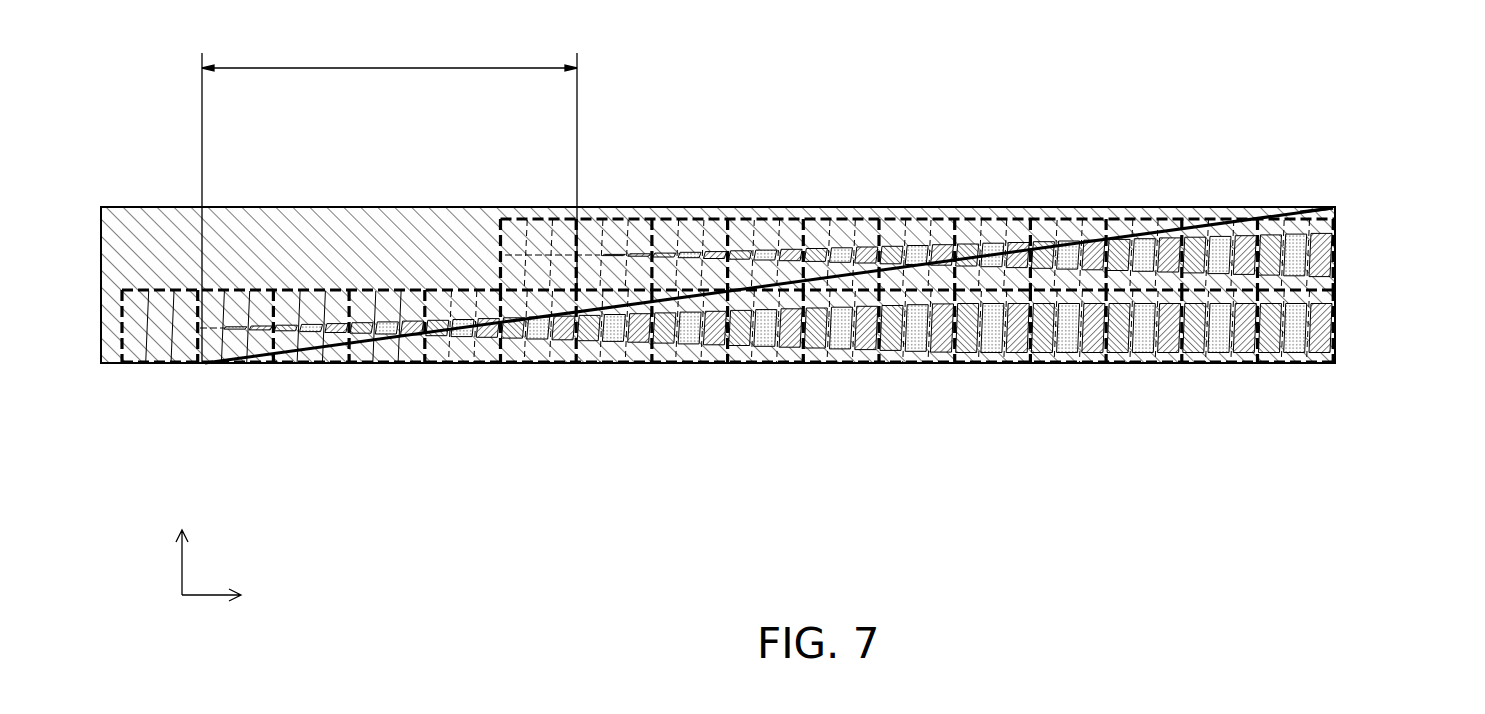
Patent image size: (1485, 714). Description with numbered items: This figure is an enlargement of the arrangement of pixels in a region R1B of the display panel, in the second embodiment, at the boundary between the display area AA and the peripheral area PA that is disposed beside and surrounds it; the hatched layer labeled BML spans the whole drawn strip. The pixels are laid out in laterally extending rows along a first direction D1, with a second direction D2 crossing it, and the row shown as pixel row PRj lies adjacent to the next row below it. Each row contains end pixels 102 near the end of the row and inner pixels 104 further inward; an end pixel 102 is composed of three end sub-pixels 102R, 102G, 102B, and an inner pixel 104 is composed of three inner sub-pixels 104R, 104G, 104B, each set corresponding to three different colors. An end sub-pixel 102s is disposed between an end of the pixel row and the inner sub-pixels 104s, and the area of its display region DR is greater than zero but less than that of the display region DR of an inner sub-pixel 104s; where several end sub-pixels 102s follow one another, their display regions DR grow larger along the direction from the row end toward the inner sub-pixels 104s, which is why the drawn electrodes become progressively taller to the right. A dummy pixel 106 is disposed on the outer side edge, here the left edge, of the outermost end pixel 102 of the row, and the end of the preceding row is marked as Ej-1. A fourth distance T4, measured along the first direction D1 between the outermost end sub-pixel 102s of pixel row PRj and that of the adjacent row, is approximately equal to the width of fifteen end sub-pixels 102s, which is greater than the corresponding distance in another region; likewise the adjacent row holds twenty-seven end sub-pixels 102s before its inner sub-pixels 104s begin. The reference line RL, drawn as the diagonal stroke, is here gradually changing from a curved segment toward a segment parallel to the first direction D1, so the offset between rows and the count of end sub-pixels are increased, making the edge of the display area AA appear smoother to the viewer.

The region R1B is at (1305, 118).
The peripheral area PA is at (151, 214).
The black matrix layer BML is at (262, 214).
The fourth distance T4 is at (389, 202).
The dummy pixel 106 is at (543, 216).
The end pixel 102 is at (536, 324).
The end sub-pixel 102B is at (443, 364).
The end sub-pixel 102G is at (467, 364).
The end sub-pixel 102R is at (370, 440).
The end sub-pixel 102s is at (595, 218).
The inner pixel 104 is at (1097, 393).
The inner sub-pixel 104B is at (1270, 364).
The inner sub-pixel 104G is at (1298, 364).
The inner sub-pixel 104R is at (1085, 440).
The inner sub-pixel 104s is at (897, 364).
The display region DR is at (920, 246).
The reference line RL is at (1162, 219).
The display area AA is at (1312, 210).
The pixel row PRj is at (971, 217).
The edge of pixel j-1 Ej-1 is at (122, 343).
The first direction D1 is at (228, 600).
The second direction D2 is at (179, 548).